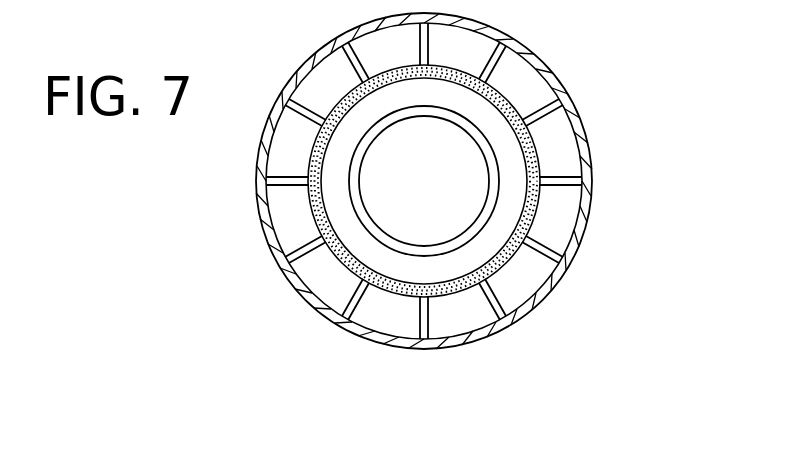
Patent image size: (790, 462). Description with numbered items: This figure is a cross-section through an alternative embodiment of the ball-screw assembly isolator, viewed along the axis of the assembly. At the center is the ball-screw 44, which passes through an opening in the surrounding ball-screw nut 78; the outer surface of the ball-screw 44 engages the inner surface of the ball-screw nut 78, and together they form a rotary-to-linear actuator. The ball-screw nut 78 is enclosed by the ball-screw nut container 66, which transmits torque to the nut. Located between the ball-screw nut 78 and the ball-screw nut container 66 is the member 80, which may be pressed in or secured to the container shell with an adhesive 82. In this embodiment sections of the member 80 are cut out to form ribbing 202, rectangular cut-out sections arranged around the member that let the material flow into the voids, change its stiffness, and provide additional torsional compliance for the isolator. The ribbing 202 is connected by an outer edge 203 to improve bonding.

The ball-screw nut container 66 is at (308, 65).
The outer edge 203 is at (557, 83).
The ball-screw nut 78 is at (510, 147).
The ball-screw 44 is at (472, 185).
The ribbing 202 is at (573, 182).
The member 80 is at (570, 208).
The adhesive 82 is at (532, 292).